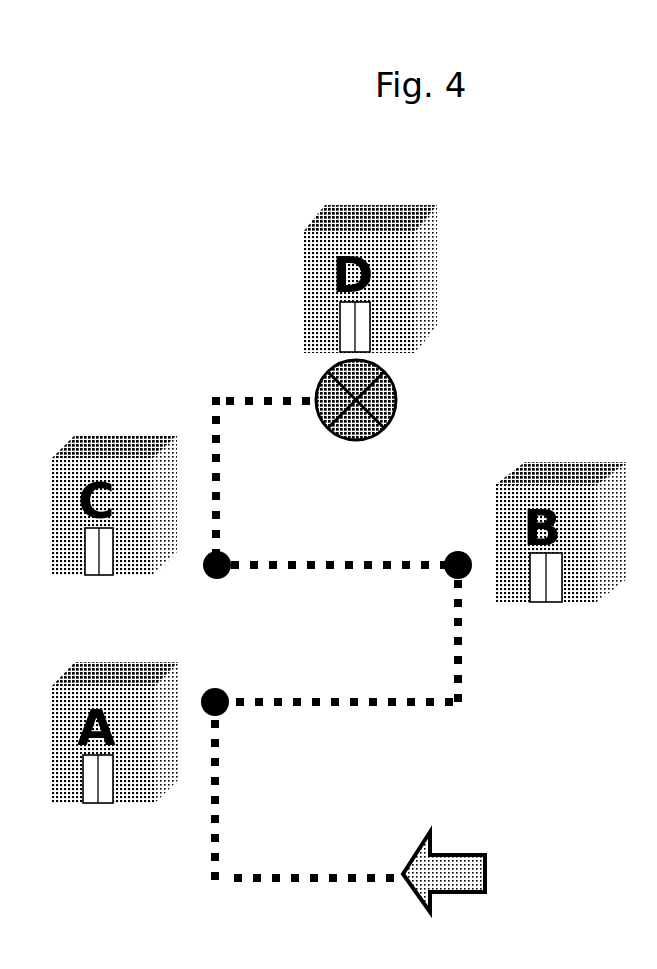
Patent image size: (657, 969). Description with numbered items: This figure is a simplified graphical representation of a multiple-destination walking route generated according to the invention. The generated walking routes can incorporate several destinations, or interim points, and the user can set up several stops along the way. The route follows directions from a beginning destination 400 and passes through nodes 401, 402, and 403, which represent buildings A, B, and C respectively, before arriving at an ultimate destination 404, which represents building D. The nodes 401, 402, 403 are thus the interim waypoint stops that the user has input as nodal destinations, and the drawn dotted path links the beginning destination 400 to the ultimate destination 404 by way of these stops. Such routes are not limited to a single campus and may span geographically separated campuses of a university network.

The beginning destination 400 is at (470, 842).
The node 401 is at (230, 728).
The node 402 is at (470, 588).
The node 403 is at (203, 578).
The ultimate destination 404 is at (407, 400).